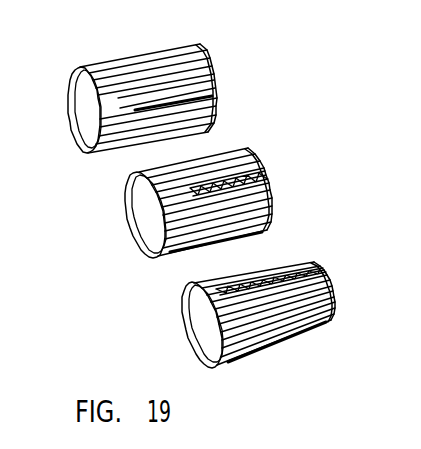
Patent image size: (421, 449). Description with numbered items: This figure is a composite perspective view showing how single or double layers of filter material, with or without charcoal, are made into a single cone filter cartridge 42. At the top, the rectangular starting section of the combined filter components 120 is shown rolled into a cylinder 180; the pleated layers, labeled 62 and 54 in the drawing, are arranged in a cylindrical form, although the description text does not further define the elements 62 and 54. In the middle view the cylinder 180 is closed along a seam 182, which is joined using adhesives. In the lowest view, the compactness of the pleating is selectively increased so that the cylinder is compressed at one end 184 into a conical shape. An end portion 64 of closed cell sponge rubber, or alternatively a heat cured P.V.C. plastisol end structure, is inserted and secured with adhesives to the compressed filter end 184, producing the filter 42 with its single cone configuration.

The combined filter components 120 is at (120, 50).
The end ring 54 is at (71, 88).
The slat 62 is at (136, 55).
The cylinder 180 is at (214, 85).
The seam 182 is at (267, 183).
The single cone filter cartridge 42 is at (272, 347).
The end portion 64 is at (320, 285).
The compressed filter end 184 is at (327, 318).